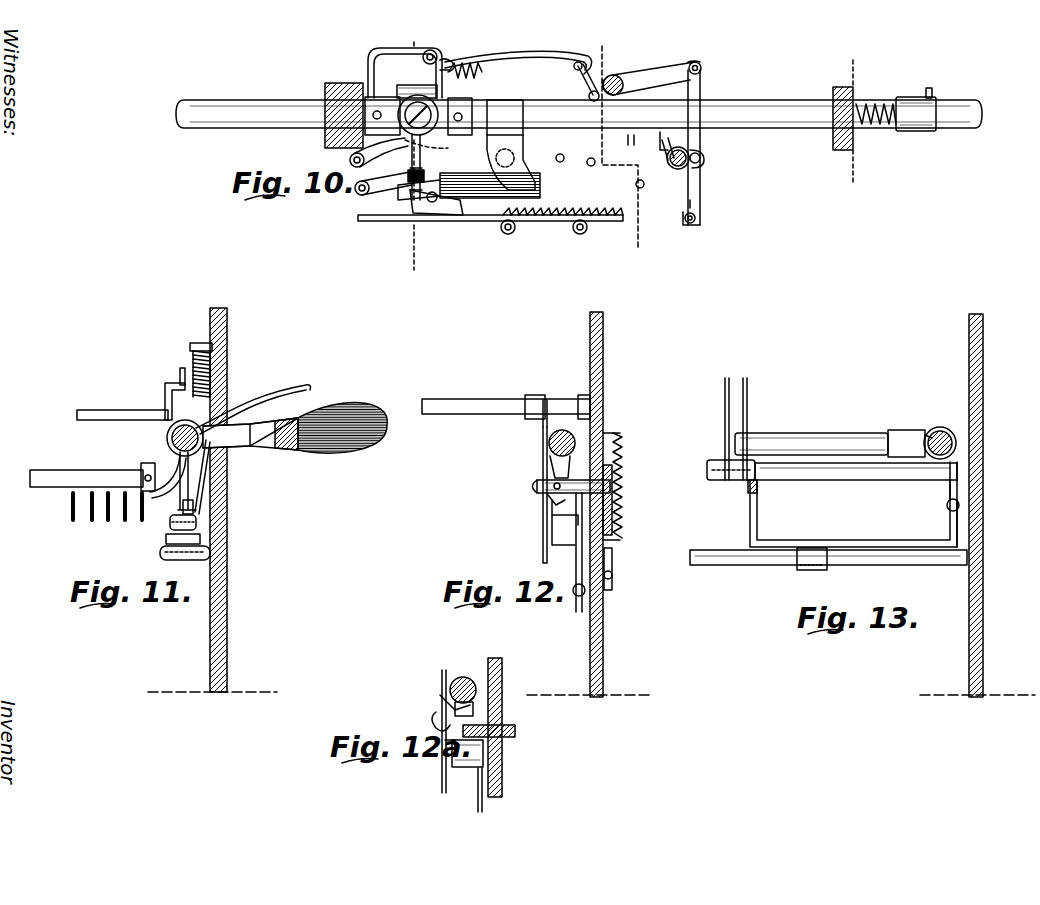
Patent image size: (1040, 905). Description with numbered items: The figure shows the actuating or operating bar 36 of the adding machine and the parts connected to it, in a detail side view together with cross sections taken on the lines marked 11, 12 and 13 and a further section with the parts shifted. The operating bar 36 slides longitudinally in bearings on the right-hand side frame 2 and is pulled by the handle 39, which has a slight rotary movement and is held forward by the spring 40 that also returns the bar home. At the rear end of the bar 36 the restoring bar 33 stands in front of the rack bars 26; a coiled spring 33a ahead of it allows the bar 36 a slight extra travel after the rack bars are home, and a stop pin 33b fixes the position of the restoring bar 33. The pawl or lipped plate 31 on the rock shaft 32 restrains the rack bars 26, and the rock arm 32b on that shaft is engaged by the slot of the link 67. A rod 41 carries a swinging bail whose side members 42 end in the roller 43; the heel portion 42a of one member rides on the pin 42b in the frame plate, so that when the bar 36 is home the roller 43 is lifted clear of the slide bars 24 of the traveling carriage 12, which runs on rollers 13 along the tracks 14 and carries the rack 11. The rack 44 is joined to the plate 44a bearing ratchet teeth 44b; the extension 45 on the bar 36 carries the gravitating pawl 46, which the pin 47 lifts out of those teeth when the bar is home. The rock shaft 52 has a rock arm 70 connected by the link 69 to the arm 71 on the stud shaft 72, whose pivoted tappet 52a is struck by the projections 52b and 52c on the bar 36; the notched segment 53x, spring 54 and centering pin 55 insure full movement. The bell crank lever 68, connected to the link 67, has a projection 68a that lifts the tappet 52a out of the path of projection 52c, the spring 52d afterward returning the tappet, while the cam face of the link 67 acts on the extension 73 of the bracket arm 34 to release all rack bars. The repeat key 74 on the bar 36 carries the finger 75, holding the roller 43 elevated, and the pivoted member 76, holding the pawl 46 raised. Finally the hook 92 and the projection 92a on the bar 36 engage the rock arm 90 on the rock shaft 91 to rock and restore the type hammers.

In FIG. 11, the side frame 2 is at (220, 590).
In FIG. 12, the side frame 2 is at (603, 624).
In FIG. 13, the side frame 2 is at (983, 626).
In FIG. 10, the rack 11 is at (417, 152).
In FIG. 10, the slide bar carriage 12 is at (624, 153).
In FIG. 10, the rollers 13 is at (855, 123).
In FIG. 13, the tracks 14 is at (902, 565).
In FIG. 10, the slide bars 24 is at (594, 165).
In FIG. 11, the slide bars 24 is at (70, 520).
In FIG. 13, the rack bars 26 is at (737, 417).
In FIG. 13, the pawl or lipped plate 31 is at (726, 482).
In FIG. 13, the rock shaft 32 is at (847, 480).
In FIG. 13, the rock arm 32b is at (960, 487).
In FIG. 10, the restoring bar 33 is at (915, 131).
In FIG. 13, the restoring bar 33 is at (826, 432).
In FIG. 10, the spring 33a is at (876, 104).
In FIG. 13, the spring 33a is at (945, 462).
In FIG. 10, the stop pin 33b is at (932, 92).
In FIG. 13, the stop pin 33b is at (936, 428).
In FIG. 13, the bracket arm 34 is at (758, 490).
In FIG. 10, the operating bar 36 is at (579, 114).
In FIG. 11, the operating bar 36 is at (168, 438).
In FIG. 12, the operating bar 36 is at (575, 432).
In FIG. 12a, the operating bar 36 is at (468, 676).
In FIG. 13, the operating bar 36 is at (960, 435).
In FIG. 10, the handle 39 is at (379, 152).
In FIG. 11, the handle 39 is at (295, 434).
In FIG. 10, the spring 40 is at (482, 68).
In FIG. 11, the spring 40 is at (190, 360).
In FIG. 10, the rod 41 is at (505, 198).
In FIG. 11, the rod 41 is at (86, 467).
In FIG. 10, the side members of bail 42 is at (410, 200).
In FIG. 11, the side members of bail 42 is at (168, 476).
In FIG. 10, the heel portion 42a is at (554, 151).
In FIG. 11, the heel portion 42a is at (140, 468).
In FIG. 10, the pin 42b is at (636, 184).
In FIG. 10, the roller 43 is at (362, 195).
In FIG. 13, the rack 44 is at (800, 568).
In FIG. 10, the plate 44a is at (420, 255).
In FIG. 11, the plate 44a is at (160, 552).
In FIG. 10, the ratchet teeth 44b is at (546, 222).
In FIG. 10, the extension 45 is at (502, 162).
In FIG. 11, the extension 45 is at (200, 488).
In FIG. 10, the gravitating pawl 46 is at (450, 214).
In FIG. 11, the gravitating pawl 46 is at (200, 540).
In FIG. 10, the pin 47 is at (588, 172).
In FIG. 11, the pin 47 is at (198, 520).
In FIG. 10, the rock shaft 52 is at (616, 80).
In FIG. 12, the rock shaft 52 is at (486, 400).
In FIG. 10, the tappet 52a is at (662, 145).
In FIG. 12, the tappet 52a is at (553, 465).
In FIG. 10, the projection 52b is at (612, 140).
In FIG. 10, the projection 52c is at (690, 152).
In FIG. 12a, the projection 52c is at (442, 696).
In FIG. 12, the spring 52d is at (534, 488).
In FIG. 12a, the spring 52d is at (434, 712).
In FIG. 12, the notched segment 53x is at (622, 515).
In FIG. 12, the spring 54 is at (612, 500).
In FIG. 12, the centering pin 55 is at (612, 566).
In FIG. 12, the link 67 is at (575, 600).
In FIG. 12a, the link 67 is at (486, 752).
In FIG. 13, the link 67 is at (960, 520).
In FIG. 10, the bell crank lever 68 is at (686, 226).
In FIG. 12, the bell crank lever 68 is at (550, 540).
In FIG. 12a, the bell crank lever 68 is at (470, 782).
In FIG. 12, the projection 68a is at (552, 518).
In FIG. 12a, the projection 68a is at (450, 760).
In FIG. 10, the link 69 is at (700, 90).
In FIG. 12, the link 69 is at (542, 436).
In FIG. 10, the rock arm 70 is at (665, 72).
In FIG. 12, the rock arm 70 is at (545, 398).
In FIG. 10, the arm 71 is at (702, 160).
In FIG. 12, the arm 71 is at (548, 503).
In FIG. 10, the stud shaft 72 is at (673, 159).
In FIG. 11, the stud shaft 72 is at (180, 376).
In FIG. 12, the stud shaft 72 is at (610, 482).
In FIG. 12a, the stud shaft 72 is at (516, 730).
In FIG. 13, the extension 73 is at (860, 540).
In FIG. 10, the repeat key 74 is at (438, 62).
In FIG. 11, the repeat key 74 is at (243, 412).
In FIG. 10, the finger 75 is at (406, 172).
In FIG. 11, the finger 75 is at (180, 515).
In FIG. 10, the pivoted member 76 is at (428, 167).
In FIG. 11, the pivoted member 76 is at (205, 476).
In FIG. 10, the rock arm 90 is at (586, 78).
In FIG. 10, the rock shaft 91 is at (587, 104).
In FIG. 11, the rock shaft 91 is at (96, 411).
In FIG. 10, the hook 92 is at (565, 50).
In FIG. 10, the projection 92a is at (452, 62).